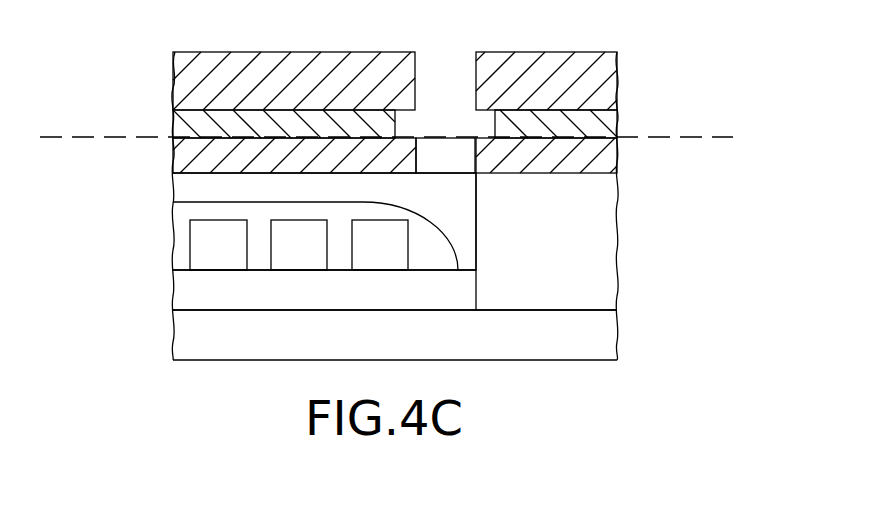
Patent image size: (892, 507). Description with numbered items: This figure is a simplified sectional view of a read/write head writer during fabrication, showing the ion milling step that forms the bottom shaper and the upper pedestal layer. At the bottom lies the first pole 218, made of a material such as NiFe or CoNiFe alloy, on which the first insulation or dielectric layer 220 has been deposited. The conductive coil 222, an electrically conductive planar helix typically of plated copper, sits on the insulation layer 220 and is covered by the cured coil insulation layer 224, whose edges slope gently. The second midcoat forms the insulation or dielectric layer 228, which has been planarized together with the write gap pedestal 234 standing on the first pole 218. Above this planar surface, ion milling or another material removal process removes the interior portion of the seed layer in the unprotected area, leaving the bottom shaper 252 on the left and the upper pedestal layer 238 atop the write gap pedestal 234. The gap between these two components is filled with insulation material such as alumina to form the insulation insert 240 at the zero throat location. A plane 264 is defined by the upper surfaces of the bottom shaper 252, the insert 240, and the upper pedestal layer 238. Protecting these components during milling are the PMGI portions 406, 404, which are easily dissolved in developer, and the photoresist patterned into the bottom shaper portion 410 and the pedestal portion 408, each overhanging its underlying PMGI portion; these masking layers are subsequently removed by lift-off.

The bottom shaper portion 410 is at (173, 62).
The pedestal portion 408 is at (617, 76).
The PMGI portion 406 is at (173, 118).
The PMGI portion 404 is at (617, 121).
The bottom shaper 252 is at (173, 160).
The upper pedestal layer 238 is at (617, 143).
The insulation insert 240 is at (468, 166).
The plane 264 is at (715, 137).
The insulation or dielectric layer 228 is at (468, 209).
The coil insulation layer 224 is at (450, 266).
The conductive coil 222 is at (190, 237).
The insulation or dielectric layer 220 is at (468, 299).
The write gap pedestal 234 is at (566, 286).
The first pole 218 is at (566, 346).